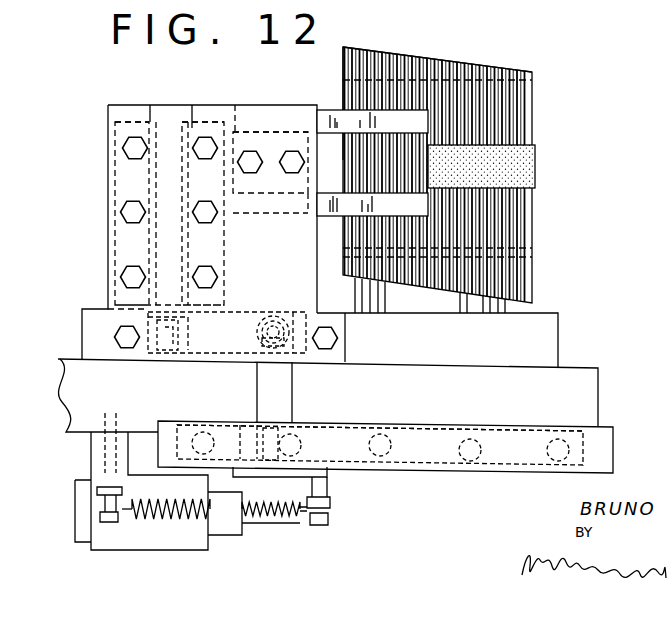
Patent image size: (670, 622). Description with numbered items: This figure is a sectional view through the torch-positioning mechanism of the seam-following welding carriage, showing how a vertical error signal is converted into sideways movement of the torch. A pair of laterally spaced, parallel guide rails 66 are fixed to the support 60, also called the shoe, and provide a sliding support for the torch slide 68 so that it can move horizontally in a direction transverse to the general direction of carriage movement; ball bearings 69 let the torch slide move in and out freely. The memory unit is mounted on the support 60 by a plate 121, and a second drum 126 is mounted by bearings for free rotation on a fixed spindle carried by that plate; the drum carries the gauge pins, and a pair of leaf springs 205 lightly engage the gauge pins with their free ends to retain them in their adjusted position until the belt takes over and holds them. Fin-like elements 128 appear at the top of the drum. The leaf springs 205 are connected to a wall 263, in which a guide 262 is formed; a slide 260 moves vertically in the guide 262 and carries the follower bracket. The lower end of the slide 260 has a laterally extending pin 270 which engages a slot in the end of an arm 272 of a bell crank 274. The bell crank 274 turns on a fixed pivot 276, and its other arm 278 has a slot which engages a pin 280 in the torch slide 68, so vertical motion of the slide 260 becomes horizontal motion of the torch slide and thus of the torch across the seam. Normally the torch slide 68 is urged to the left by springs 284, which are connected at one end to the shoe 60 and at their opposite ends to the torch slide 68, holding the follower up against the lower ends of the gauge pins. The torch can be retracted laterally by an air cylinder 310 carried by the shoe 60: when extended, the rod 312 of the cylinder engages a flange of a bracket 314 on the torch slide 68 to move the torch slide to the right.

The support 60 is at (590, 400).
The guide rails 66 is at (617, 443).
The torch slide 68 is at (427, 452).
The ball bearings 69 is at (486, 468).
The plate 121 is at (548, 347).
The second drum 126 is at (495, 77).
The fin edges 128 is at (398, 48).
The leaf springs 205 is at (372, 163).
The slide 260 is at (172, 132).
The guide 262 is at (147, 186).
The wall 263 is at (287, 116).
The pin 270 is at (167, 340).
The arm 272 is at (230, 318).
The bell crank 274 is at (287, 311).
The fixed pivot 276 is at (260, 345).
The arm 278 is at (293, 400).
The pin 280 is at (293, 418).
The springs 284 is at (223, 518).
The air cylinder 310 is at (157, 540).
The rod 312 is at (290, 525).
The bracket 314 is at (327, 482).